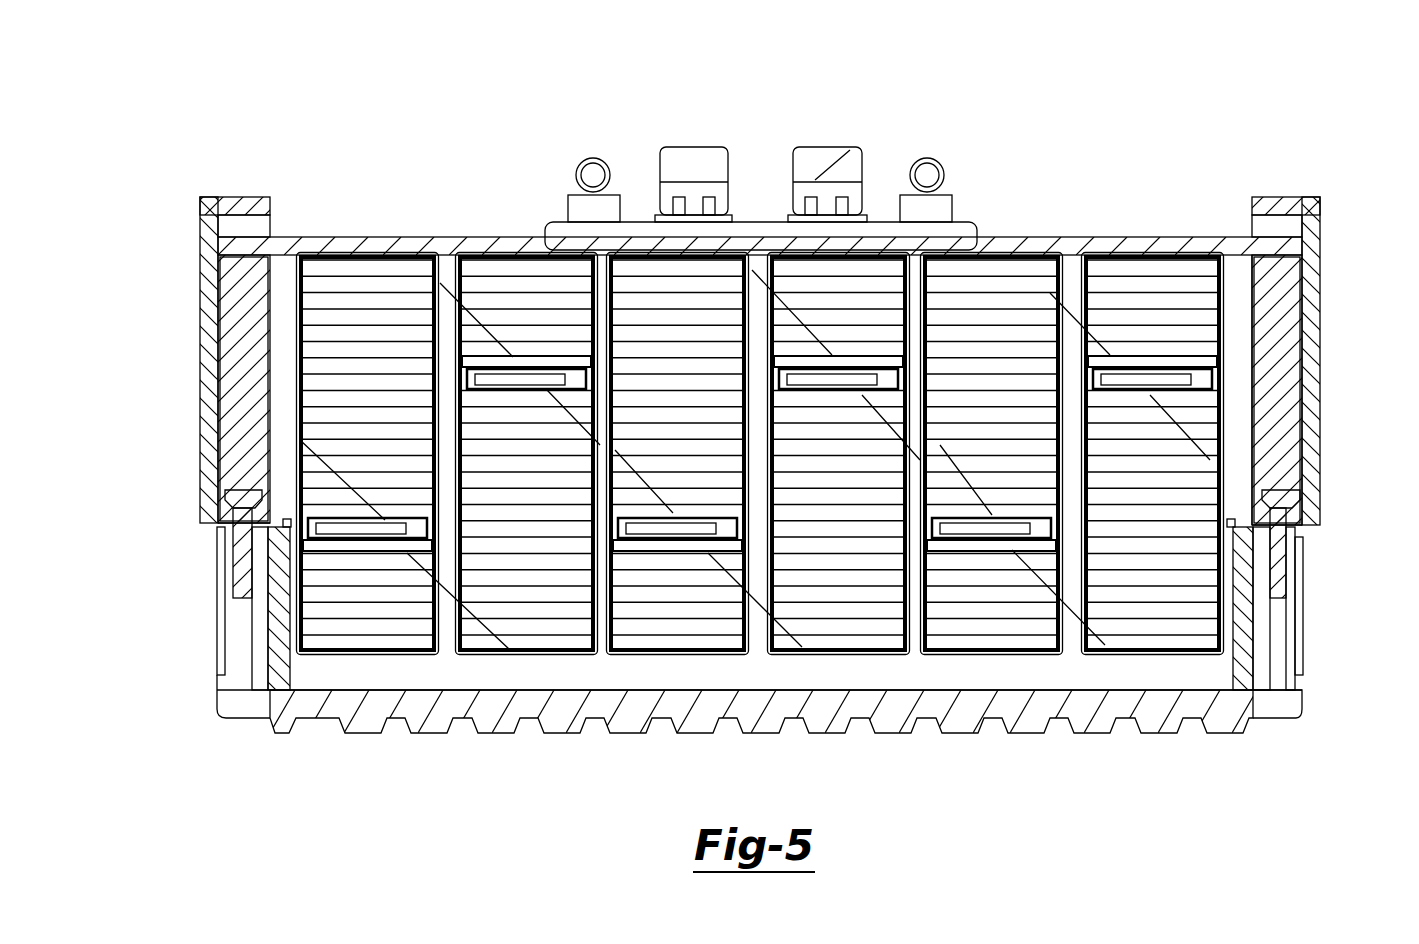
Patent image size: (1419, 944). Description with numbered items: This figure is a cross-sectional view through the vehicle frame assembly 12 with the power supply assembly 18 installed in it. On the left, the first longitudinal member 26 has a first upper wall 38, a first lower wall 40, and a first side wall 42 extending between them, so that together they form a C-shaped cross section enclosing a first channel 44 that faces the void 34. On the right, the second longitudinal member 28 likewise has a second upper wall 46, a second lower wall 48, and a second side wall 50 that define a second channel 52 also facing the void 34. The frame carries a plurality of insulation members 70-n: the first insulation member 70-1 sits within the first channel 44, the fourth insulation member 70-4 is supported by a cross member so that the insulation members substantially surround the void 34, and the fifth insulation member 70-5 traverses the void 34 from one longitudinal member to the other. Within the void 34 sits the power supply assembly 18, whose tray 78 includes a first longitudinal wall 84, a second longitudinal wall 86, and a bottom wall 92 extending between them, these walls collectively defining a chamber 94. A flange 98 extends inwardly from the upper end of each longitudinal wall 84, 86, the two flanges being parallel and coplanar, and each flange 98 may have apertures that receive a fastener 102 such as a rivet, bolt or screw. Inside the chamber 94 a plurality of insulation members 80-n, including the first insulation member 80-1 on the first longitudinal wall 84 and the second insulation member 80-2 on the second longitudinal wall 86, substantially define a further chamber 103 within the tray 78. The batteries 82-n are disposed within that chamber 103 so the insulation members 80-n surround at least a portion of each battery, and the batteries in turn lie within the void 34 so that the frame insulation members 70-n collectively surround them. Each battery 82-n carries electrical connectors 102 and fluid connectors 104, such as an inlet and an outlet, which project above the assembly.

The frame assembly 12 is at (352, 78).
The power supply assembly 18 is at (494, 224).
The first longitudinal member 26 is at (210, 282).
The second longitudinal member 28 is at (1310, 218).
The void 34 is at (1192, 223).
The first upper wall 38 is at (233, 197).
The first lower wall 40 is at (214, 528).
The first side wall 42 is at (212, 410).
The first channel 44 is at (258, 222).
The second upper wall 46 is at (1275, 197).
The second lower wall 48 is at (1300, 530).
The second side wall 50 is at (1318, 348).
The second channel 52 is at (1259, 224).
The insulation members 70-n is at (756, 393).
The first insulation member 70-1 is at (237, 303).
The fourth insulation member 70-4 is at (290, 282).
The fifth insulation member 70-5 is at (1066, 240).
The tray 78 is at (228, 708).
The insulation members 80-n is at (725, 604).
The first insulation member 80-1 is at (275, 612).
The second insulation member 80-2 is at (1243, 618).
The batteries 82-n is at (537, 606).
The first longitudinal wall 84 is at (230, 638).
The second longitudinal wall 86 is at (1295, 670).
The bottom wall 92 is at (762, 759).
The chamber 94 is at (1123, 684).
The flange 98 is at (265, 717).
The fastener 102 is at (678, 148).
The chamber 103 is at (445, 688).
The fluid connectors 104 is at (592, 158).